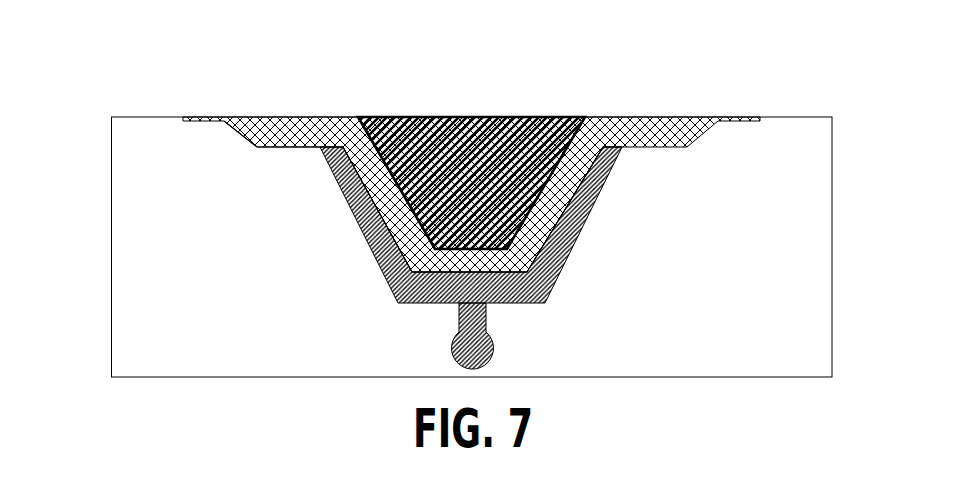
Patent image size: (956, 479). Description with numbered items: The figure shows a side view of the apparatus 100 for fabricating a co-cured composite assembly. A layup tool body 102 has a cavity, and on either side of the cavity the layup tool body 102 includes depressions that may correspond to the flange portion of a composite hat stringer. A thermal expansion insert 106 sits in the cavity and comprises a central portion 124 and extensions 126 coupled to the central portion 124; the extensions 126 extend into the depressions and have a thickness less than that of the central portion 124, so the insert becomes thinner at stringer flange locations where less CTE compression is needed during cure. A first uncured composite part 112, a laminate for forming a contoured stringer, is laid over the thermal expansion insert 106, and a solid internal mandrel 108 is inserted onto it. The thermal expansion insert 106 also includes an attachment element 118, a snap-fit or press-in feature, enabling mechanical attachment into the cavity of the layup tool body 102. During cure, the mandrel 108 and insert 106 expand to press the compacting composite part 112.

The apparatus 100 is at (146, 52).
The layup tool body 102 is at (110, 221).
The thermal expansion insert 106 is at (336, 147).
The solid internal mandrel 108 is at (441, 131).
The first uncured composite part 112 is at (250, 114).
The attachment element 118 is at (498, 347).
The central portion 124 is at (358, 259).
The extensions 126 is at (245, 146).